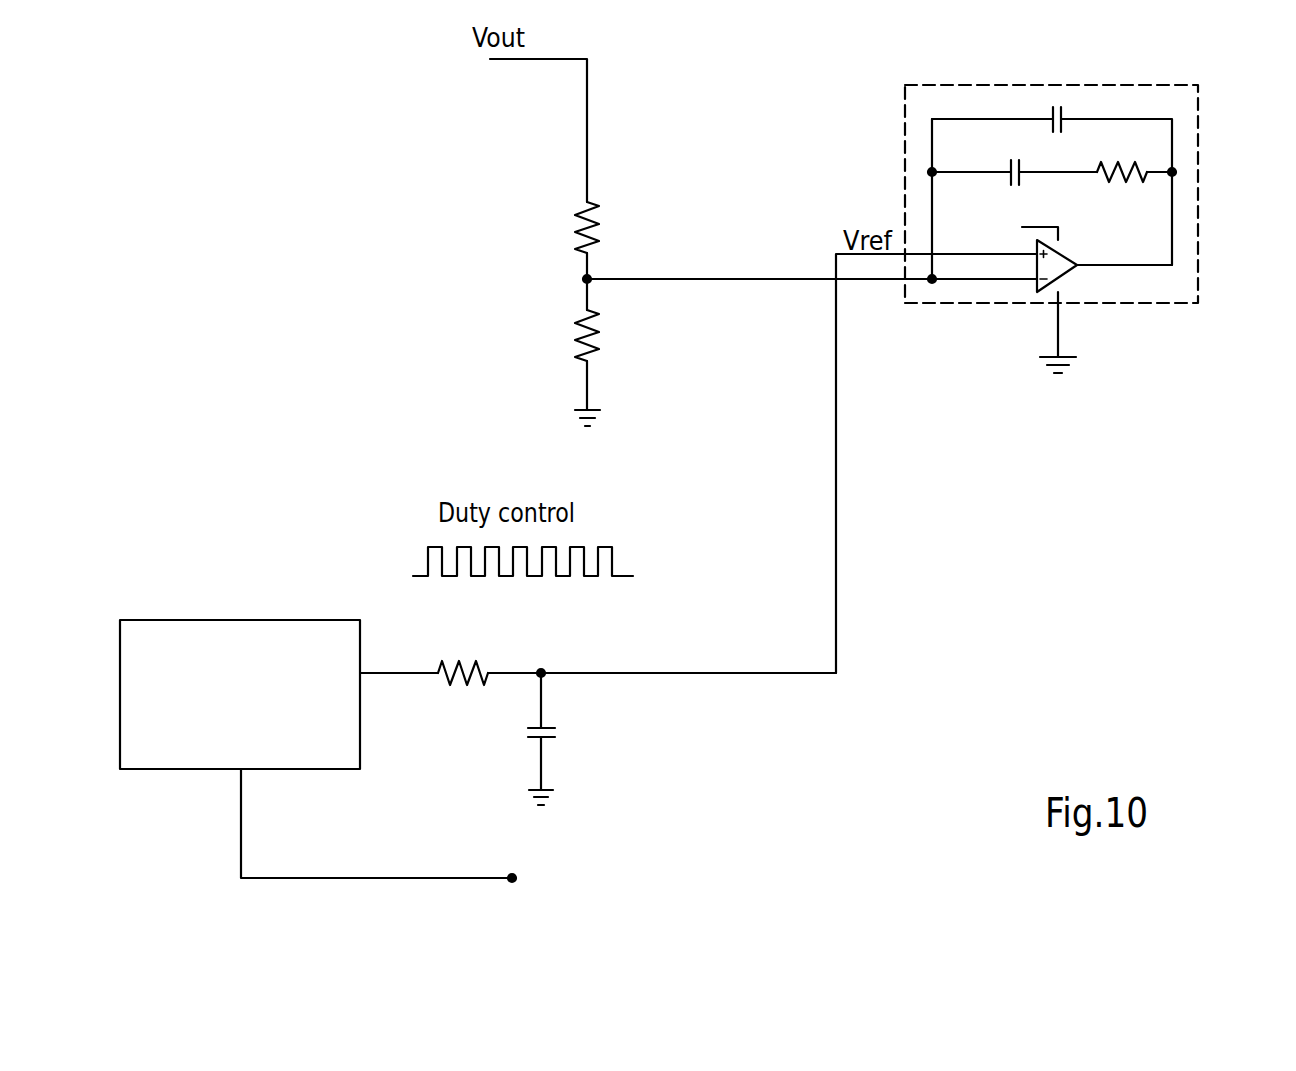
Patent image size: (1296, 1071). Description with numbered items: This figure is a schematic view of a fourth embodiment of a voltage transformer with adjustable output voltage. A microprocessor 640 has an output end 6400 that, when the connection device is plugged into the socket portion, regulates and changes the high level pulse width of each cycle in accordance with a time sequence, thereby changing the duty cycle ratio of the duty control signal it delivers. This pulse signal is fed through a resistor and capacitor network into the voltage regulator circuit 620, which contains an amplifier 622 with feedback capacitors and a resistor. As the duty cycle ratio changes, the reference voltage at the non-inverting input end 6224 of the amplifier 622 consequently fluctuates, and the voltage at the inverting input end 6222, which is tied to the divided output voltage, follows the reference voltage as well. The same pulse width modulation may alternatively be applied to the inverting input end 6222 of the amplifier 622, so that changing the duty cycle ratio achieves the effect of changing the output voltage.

The voltage regulator circuit 620 is at (1157, 303).
The amplifier 622 is at (1063, 268).
The inverting input end 6222 is at (1037, 283).
The non-inverting input end 6224 is at (1037, 240).
The microprocessor 640 is at (176, 632).
The output end 6400 is at (362, 678).